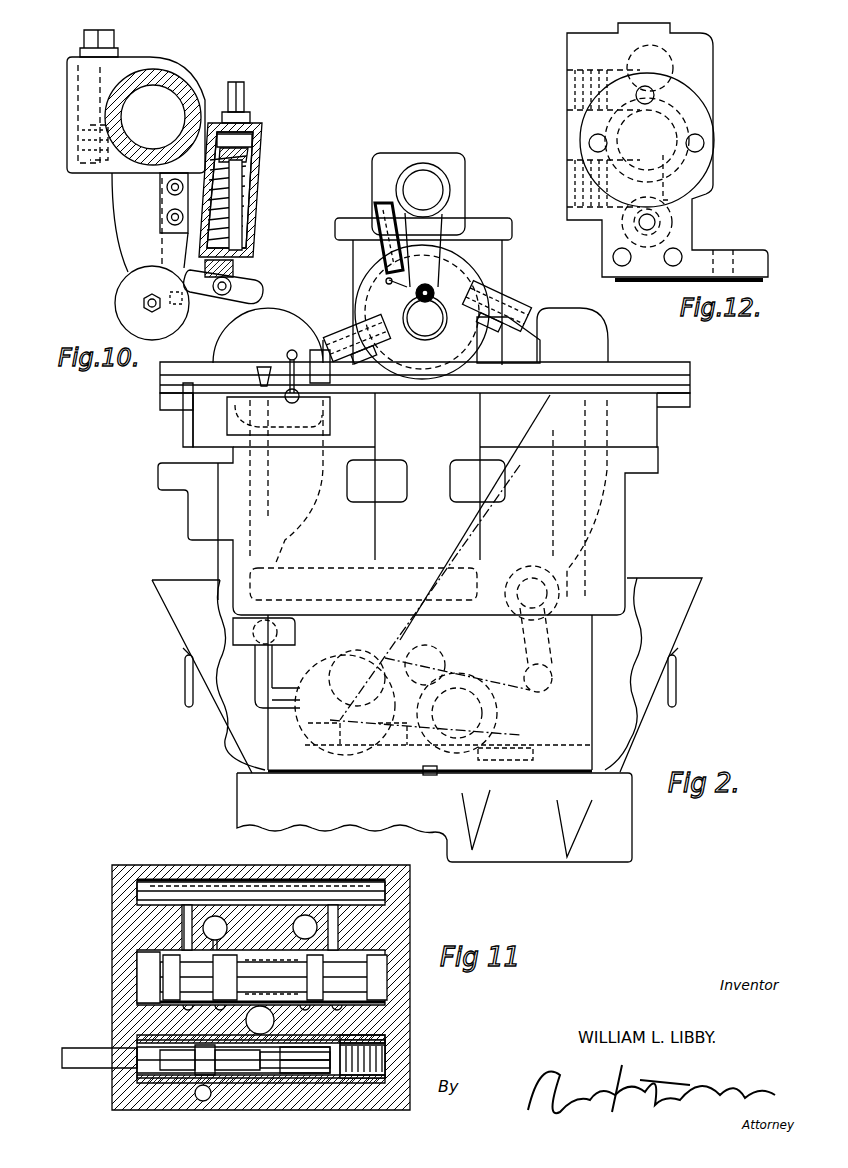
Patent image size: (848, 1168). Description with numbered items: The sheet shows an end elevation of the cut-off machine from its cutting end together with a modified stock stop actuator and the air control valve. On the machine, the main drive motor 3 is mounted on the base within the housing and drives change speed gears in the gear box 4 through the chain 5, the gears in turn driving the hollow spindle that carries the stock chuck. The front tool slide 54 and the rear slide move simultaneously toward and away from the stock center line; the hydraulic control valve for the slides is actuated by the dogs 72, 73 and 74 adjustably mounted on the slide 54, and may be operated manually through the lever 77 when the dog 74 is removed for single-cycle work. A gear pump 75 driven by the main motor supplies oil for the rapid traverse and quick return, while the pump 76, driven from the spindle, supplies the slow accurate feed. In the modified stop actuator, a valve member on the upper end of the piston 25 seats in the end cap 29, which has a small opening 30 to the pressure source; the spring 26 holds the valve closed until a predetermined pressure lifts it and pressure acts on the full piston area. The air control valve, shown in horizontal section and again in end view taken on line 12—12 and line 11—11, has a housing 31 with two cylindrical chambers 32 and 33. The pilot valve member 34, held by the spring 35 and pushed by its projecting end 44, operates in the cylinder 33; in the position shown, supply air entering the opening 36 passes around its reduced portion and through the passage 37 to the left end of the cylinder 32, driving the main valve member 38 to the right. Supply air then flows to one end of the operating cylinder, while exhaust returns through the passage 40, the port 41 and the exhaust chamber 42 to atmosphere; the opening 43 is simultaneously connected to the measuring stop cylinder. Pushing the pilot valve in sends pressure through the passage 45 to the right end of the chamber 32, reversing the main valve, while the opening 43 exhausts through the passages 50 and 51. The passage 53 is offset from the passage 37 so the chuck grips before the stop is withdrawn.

In FIG. 2, the main drive motor 3 is at (347, 630).
In FIG. 2, the gear box 4 is at (578, 336).
In FIG. 2, the chain 5 is at (482, 518).
In FIG. 12, the section line 11- 11 is at (645, 18).
In FIG. 11, the section line 12— 12 is at (58, 1135).
In FIG. 10, the piston 25 is at (250, 157).
In FIG. 10, the spring 26 is at (253, 193).
In FIG. 10, the end cap 29 is at (251, 125).
In FIG. 10, the opening 30 is at (245, 117).
In FIG. 11, the housing 31 is at (400, 1000).
In FIG. 11, the cylindrical chamber 32 is at (148, 970).
In FIG. 11, the cylindrical chamber 33 is at (395, 1052).
In FIG. 11, the pilot valve member 34 is at (148, 1062).
In FIG. 11, the spring 35 is at (385, 1060).
In FIG. 12, the opening 36 is at (568, 183).
In FIG. 11, the opening 36 is at (262, 1019).
In FIG. 11, the passage 37 is at (135, 1035).
In FIG. 11, the main valve member 38 is at (262, 978).
In FIG. 12, the passage 40 is at (582, 82).
In FIG. 11, the passage 40 is at (215, 933).
In FIG. 12, the port 41 is at (673, 66).
In FIG. 11, the port 41 is at (165, 880).
In FIG. 12, the exhaust chamber 42 is at (700, 37).
In FIG. 11, the exhaust chamber 42 is at (212, 880).
In FIG. 11, the opening 43 is at (208, 1100).
In FIG. 11, the projecting end 44 is at (98, 1068).
In FIG. 11, the passage 45 is at (395, 1032).
In FIG. 11, the passage 50 is at (230, 1078).
In FIG. 11, the passage 51 is at (175, 1068).
In FIG. 11, the passage 53 is at (290, 1080).
In FIG. 2, the front tool slide 54 is at (218, 383).
In FIG. 2, the dog 72 is at (188, 405).
In FIG. 2, the dog 73 is at (262, 367).
In FIG. 2, the dog 74 is at (343, 395).
In FIG. 2, the gear pump 75 is at (313, 715).
In FIG. 2, the pump 76 is at (260, 325).
In FIG. 2, the lever 77 is at (292, 350).